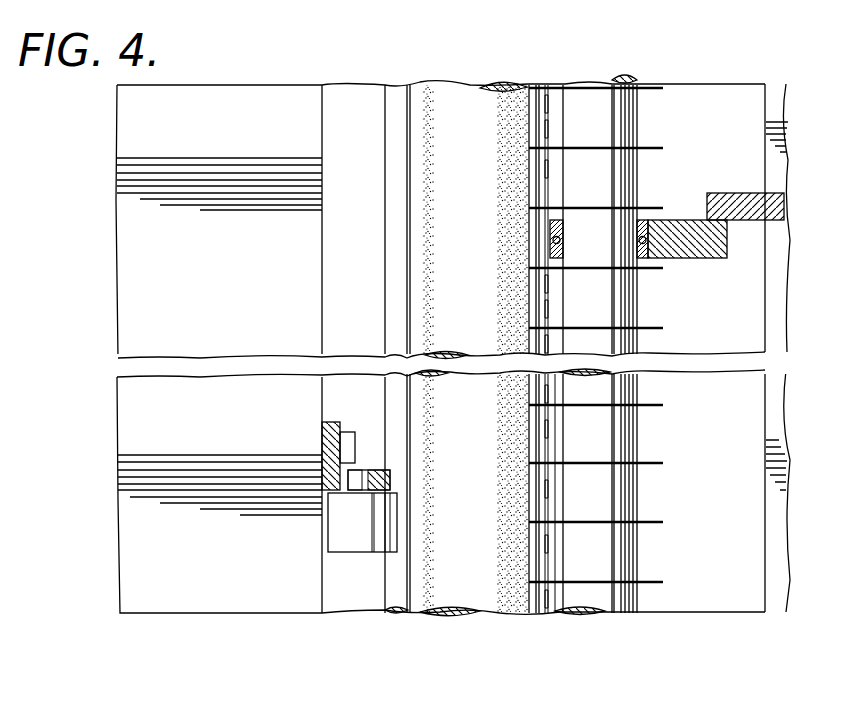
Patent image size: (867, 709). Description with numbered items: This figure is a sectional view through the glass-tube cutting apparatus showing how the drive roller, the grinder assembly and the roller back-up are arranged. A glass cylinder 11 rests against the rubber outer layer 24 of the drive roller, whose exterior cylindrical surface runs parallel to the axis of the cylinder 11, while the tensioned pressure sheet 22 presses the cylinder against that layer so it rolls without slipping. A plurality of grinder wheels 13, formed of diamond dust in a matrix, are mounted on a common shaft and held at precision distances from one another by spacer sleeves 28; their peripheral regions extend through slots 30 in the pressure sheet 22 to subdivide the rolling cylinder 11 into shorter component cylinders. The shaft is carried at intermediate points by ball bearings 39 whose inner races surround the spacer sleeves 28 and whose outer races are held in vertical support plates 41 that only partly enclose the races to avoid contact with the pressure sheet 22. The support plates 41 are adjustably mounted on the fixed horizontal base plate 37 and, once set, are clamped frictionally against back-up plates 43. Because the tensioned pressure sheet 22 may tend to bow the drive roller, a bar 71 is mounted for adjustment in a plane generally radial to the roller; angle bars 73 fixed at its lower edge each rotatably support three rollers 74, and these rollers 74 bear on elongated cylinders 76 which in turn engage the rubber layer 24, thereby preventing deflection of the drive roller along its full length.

The bar 71 is at (117, 382).
The glass cylinders 11 is at (535, 223).
The spacer sleeves 28 is at (628, 318).
The grinder wheels 13 is at (663, 462).
The slots 30 is at (562, 522).
The bearings 39 is at (650, 236).
The support plates 41 is at (713, 260).
The back-up plates 43 is at (785, 210).
The base plate 37 is at (735, 613).
The angle bars 73 is at (322, 440).
The rollers 74 is at (368, 552).
The elongated cylinders 76 is at (385, 606).
The rubber outer layer 24 is at (478, 606).
The pressure sheet 22 is at (553, 609).